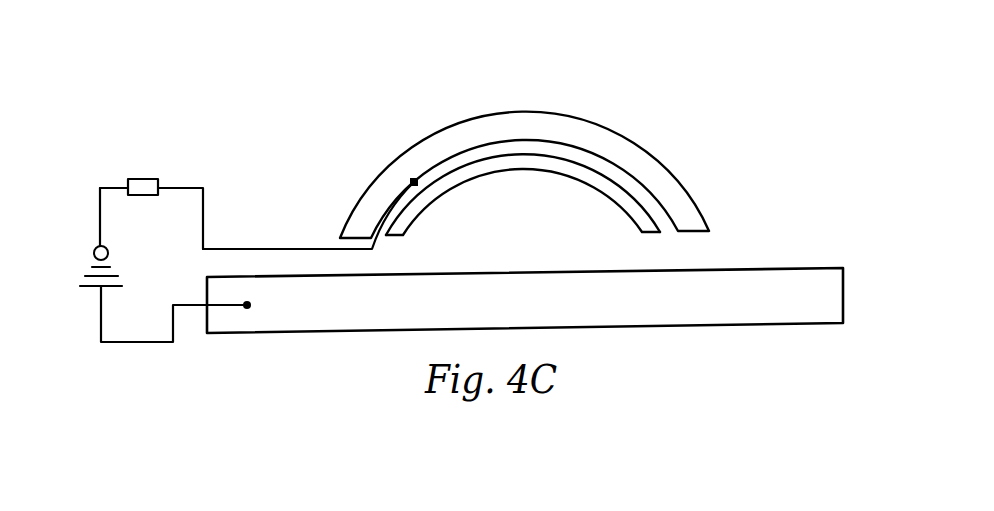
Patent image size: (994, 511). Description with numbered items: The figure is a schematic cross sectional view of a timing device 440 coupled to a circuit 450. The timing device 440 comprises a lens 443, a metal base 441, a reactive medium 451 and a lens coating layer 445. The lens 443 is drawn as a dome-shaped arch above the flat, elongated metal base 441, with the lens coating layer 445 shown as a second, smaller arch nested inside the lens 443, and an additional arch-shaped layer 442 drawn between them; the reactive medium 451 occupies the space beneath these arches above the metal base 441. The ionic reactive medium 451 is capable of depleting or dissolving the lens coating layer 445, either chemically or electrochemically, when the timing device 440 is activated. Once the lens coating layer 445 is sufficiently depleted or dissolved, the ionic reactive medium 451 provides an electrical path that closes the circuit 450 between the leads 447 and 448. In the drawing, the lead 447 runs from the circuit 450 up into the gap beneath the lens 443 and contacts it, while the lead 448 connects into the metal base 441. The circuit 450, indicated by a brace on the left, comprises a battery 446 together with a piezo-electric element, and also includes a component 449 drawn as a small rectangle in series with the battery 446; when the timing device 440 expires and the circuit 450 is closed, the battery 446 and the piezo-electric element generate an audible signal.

The timing device 440 is at (228, 103).
The metal base 441 is at (843, 297).
The inner electrode layer 442 is at (523, 148).
The lens 443 is at (613, 128).
The lens coating layer 445 is at (622, 197).
The battery 446 is at (91, 288).
The lead 447 is at (282, 248).
The lead 448 is at (230, 308).
The resistor 449 is at (142, 178).
The circuit 450 is at (43, 370).
The reactive medium 451 is at (542, 239).